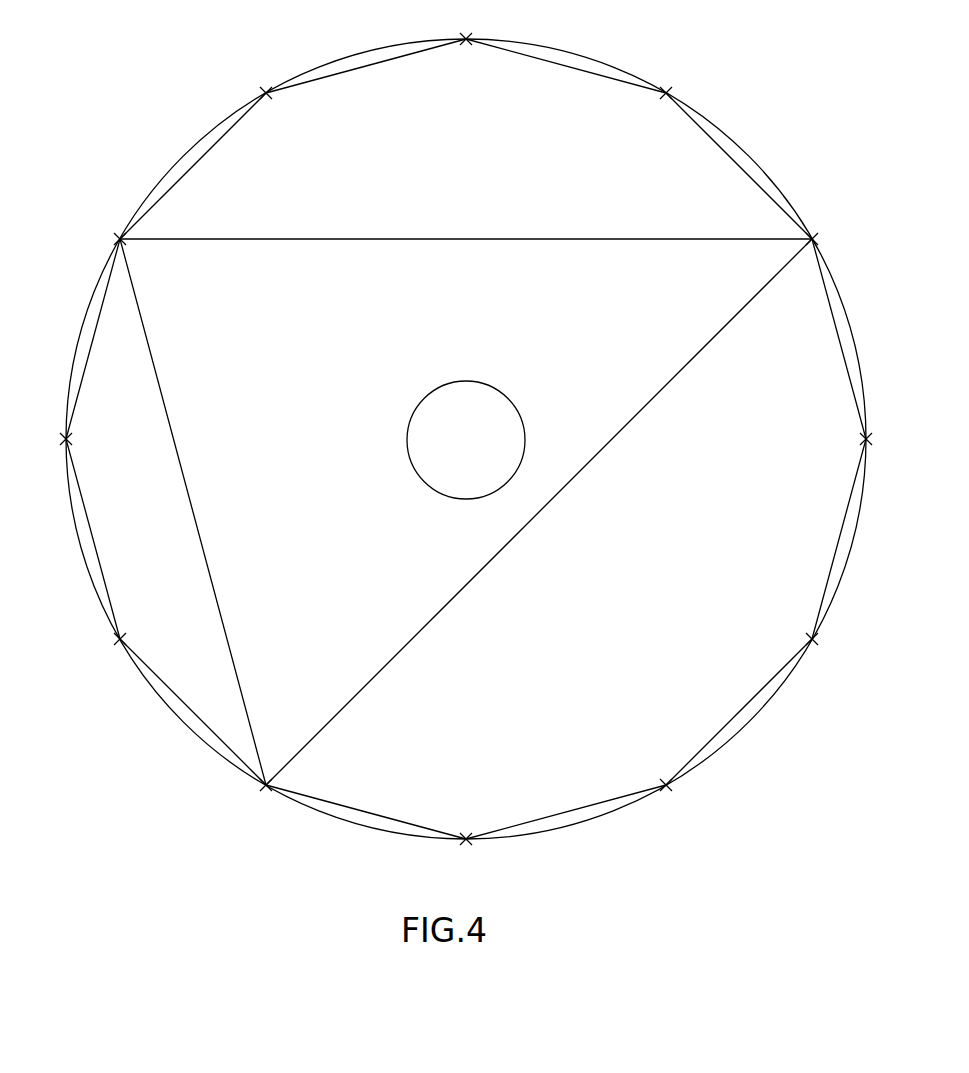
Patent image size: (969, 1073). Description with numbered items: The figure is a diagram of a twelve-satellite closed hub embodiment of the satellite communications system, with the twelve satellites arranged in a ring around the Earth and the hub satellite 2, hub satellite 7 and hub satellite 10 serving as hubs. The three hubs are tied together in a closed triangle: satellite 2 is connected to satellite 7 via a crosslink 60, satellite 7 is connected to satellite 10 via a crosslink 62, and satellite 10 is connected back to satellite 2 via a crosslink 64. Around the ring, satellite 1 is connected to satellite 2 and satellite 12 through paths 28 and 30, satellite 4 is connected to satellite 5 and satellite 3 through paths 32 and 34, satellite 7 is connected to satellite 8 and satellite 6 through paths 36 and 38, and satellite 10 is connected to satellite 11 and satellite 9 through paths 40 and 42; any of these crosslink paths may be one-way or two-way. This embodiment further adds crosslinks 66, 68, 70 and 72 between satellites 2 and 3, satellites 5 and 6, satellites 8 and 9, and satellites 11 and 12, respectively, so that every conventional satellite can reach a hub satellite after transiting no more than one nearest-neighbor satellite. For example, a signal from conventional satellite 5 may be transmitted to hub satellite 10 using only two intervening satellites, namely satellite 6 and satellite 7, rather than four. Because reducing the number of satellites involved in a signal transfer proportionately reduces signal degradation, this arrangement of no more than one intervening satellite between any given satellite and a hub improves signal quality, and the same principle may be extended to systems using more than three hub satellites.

The satellite 1 is at (678, 79).
The hub satellite 2 is at (825, 225).
The satellite 3 is at (881, 437).
The satellite 4 is at (823, 650).
The conventional satellite 5 is at (677, 797).
The satellite 6 is at (466, 853).
The hub satellite 7 is at (259, 800).
The satellite 8 is at (107, 649).
The satellite 9 is at (51, 441).
The hub satellite 10 is at (104, 224).
The satellite 11 is at (254, 78).
The satellite 12 is at (462, 25).
The crosslink transmission path 28 is at (737, 167).
The crosslink transmission path 30 is at (565, 67).
The crosslink transmission path 32 is at (740, 712).
The crosslink transmission path 34 is at (840, 538).
The crosslink transmission path 36 is at (197, 712).
The crosslink transmission path 38 is at (365, 812).
The crosslink transmission path 40 is at (192, 167).
The crosslink transmission path 42 is at (92, 342).
The crosslink 60 is at (541, 513).
The crosslink 62 is at (193, 512).
The crosslink 64 is at (464, 239).
The crosslink 66 is at (840, 340).
The crosslink 68 is at (567, 812).
The crosslink 70 is at (93, 540).
The crosslink 72 is at (363, 70).